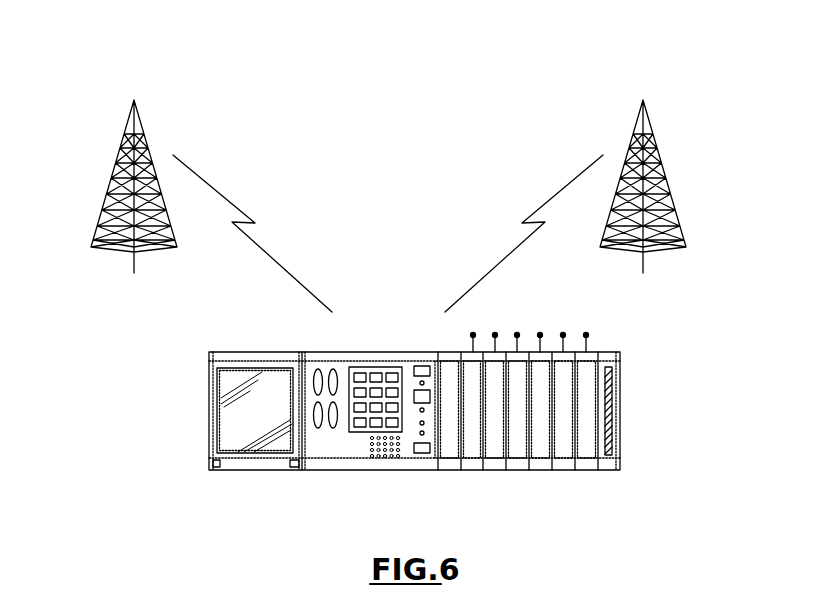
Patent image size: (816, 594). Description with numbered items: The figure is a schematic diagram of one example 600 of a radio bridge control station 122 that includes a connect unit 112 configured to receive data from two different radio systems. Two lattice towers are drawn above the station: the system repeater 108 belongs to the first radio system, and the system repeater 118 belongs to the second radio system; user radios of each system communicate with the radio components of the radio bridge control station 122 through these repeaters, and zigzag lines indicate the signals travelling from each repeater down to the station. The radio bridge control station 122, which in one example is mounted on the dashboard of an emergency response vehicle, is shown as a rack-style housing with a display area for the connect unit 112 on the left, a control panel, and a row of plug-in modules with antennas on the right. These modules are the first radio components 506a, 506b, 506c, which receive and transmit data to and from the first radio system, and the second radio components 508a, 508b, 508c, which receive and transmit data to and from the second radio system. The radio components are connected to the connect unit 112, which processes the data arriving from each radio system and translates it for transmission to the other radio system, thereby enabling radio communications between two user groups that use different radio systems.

The communication system 600 is at (590, 71).
The system repeater 108 is at (109, 185).
The system repeater 118 is at (668, 185).
The radio bridge control station 122 is at (209, 398).
The connect unit 112 is at (247, 453).
The first radio component 506a is at (470, 470).
The second radio component 508a is at (492, 470).
The first radio component 506b is at (515, 470).
The second radio component 508b is at (538, 470).
The first radio component 506c is at (562, 470).
The second radio component 508c is at (585, 470).